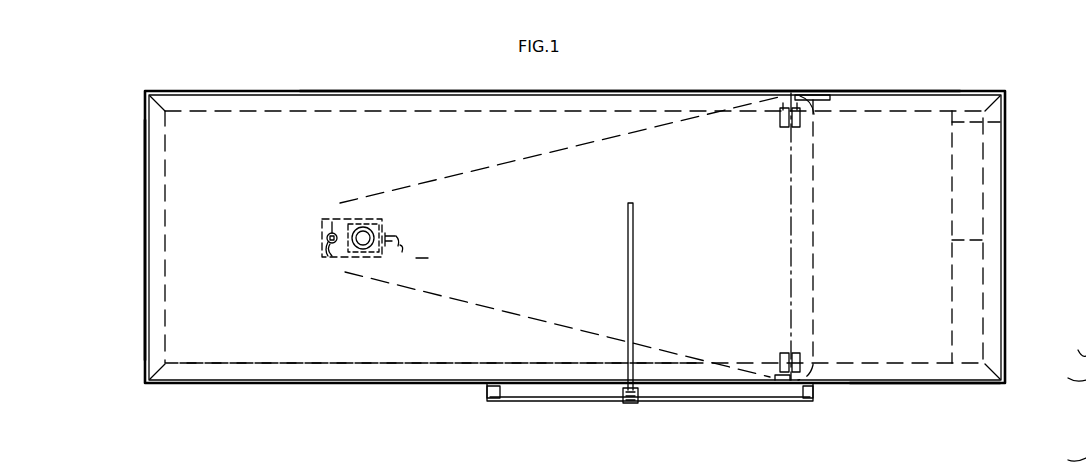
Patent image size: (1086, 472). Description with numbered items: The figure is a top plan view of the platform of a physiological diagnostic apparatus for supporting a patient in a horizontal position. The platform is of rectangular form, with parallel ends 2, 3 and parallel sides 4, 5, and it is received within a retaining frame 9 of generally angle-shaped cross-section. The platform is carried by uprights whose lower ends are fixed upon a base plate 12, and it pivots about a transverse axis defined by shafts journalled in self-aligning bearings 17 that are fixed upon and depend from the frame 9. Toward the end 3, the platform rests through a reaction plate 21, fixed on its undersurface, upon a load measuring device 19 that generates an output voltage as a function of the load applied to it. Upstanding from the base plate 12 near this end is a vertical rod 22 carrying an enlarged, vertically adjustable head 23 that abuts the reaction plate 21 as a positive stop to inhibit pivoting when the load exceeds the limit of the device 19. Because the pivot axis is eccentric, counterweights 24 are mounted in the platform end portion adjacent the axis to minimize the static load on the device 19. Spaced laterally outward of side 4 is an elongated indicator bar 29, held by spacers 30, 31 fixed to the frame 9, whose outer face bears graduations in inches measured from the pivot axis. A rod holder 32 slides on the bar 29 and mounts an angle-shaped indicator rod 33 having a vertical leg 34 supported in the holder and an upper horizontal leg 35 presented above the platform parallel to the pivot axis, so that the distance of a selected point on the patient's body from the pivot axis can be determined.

The end 2 is at (1006, 186).
The end 3 is at (145, 200).
The side 4 is at (912, 385).
The side 5 is at (912, 92).
The retaining frame 9 is at (258, 370).
The base plate 12 is at (789, 158).
The self-aligning bearing 17 is at (1064, 459).
The load measuring device 19 is at (383, 226).
The reaction plate 21 is at (322, 228).
The vertical rod 22 is at (330, 250).
The head 23 is at (333, 222).
The counterweights 24 is at (990, 240).
The indicator bar 29 is at (540, 403).
The spacer 30 is at (486, 394).
The spacer 31 is at (815, 392).
The rod holder 32 is at (630, 405).
The indicator rod 33 is at (1076, 341).
The vertical leg 34 is at (1063, 380).
The horizontal leg 35 is at (628, 322).